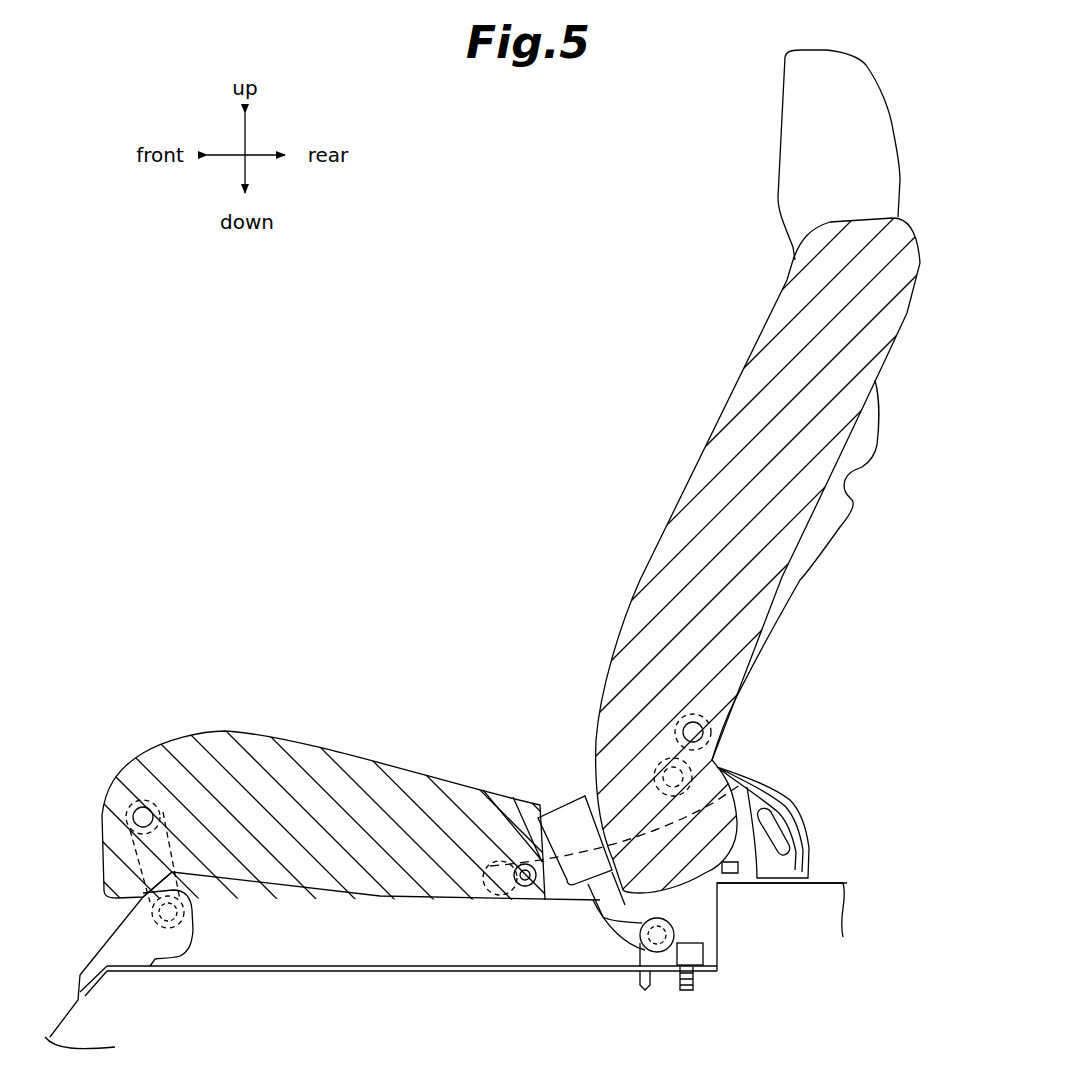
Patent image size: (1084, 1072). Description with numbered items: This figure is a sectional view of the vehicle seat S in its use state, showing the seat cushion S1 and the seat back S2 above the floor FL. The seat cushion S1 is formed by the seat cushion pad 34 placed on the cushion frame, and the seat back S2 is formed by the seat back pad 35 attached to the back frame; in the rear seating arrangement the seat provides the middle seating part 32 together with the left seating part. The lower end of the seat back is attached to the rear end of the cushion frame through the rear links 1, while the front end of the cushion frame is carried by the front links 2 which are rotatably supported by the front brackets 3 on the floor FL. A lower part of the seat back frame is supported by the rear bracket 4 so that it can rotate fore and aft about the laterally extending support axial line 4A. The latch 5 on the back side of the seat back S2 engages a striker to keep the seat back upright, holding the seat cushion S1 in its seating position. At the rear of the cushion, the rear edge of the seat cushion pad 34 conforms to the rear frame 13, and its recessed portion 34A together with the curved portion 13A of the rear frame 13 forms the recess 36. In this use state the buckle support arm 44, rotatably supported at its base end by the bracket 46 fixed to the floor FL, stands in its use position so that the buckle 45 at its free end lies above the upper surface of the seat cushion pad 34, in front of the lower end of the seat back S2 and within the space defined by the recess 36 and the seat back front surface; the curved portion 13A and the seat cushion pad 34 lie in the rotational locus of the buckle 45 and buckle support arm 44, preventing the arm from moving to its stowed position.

The vehicle seat S is at (190, 362).
The seat cushion S1 is at (245, 726).
The seat back S2 is at (752, 320).
The rear link 1 is at (720, 868).
The front link 2 is at (125, 848).
The front bracket 3 is at (177, 947).
The rear bracket 4 is at (778, 797).
The support axial line 4A is at (740, 766).
The latch 5 is at (870, 458).
The rear frame 13 is at (530, 884).
The curved portion 13A is at (520, 884).
The middle seating part 32 is at (320, 833).
The seat cushion pad 34 is at (303, 757).
The recessed portion 34A is at (530, 800).
The seat back pad 35 is at (720, 485).
The recess 36 is at (548, 800).
The buckle support arm 44 is at (612, 915).
The buckle 45 is at (583, 798).
The bracket 46 is at (665, 953).
The floor FL is at (355, 965).